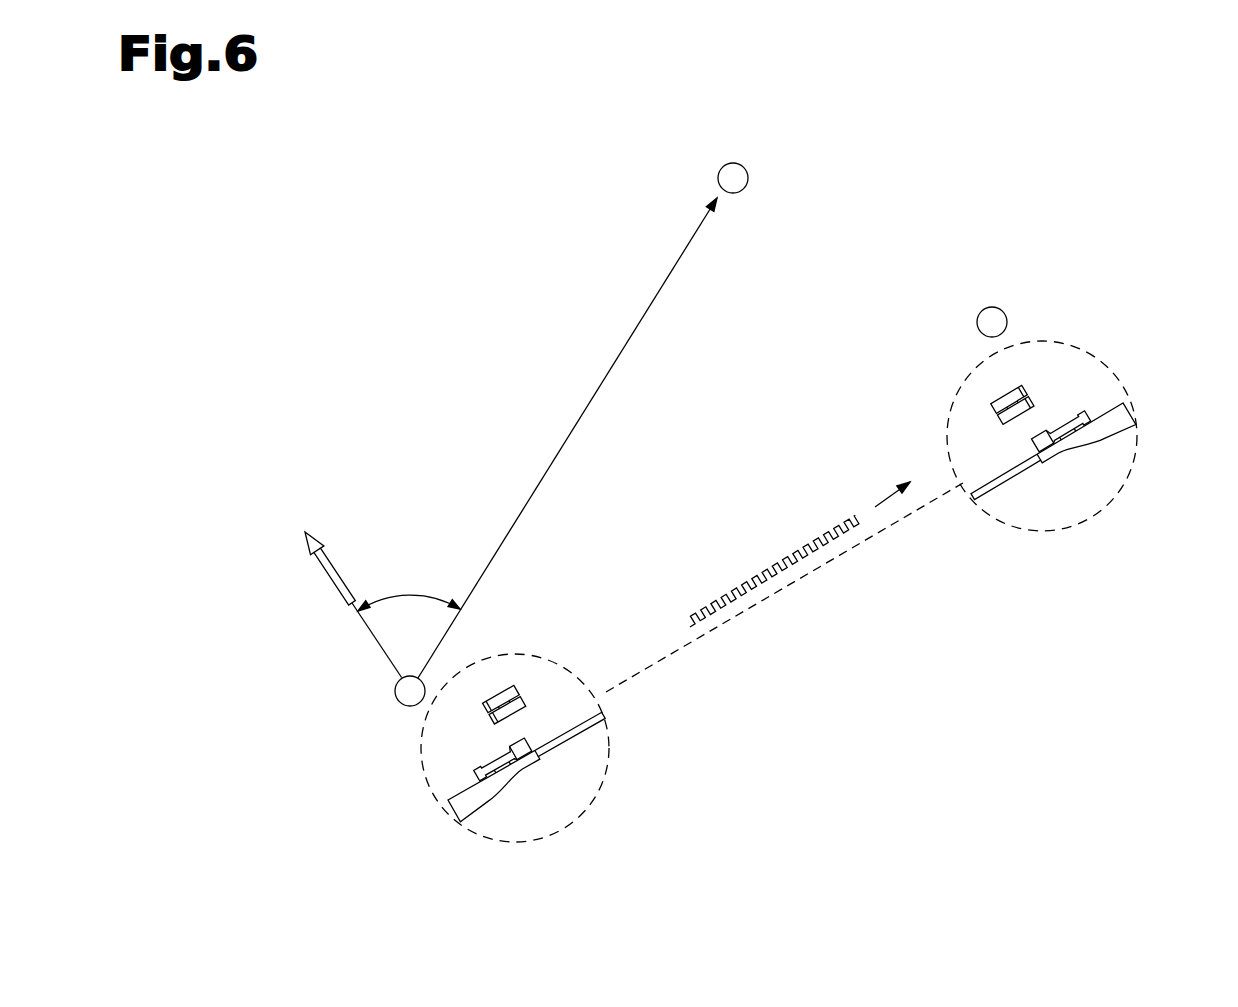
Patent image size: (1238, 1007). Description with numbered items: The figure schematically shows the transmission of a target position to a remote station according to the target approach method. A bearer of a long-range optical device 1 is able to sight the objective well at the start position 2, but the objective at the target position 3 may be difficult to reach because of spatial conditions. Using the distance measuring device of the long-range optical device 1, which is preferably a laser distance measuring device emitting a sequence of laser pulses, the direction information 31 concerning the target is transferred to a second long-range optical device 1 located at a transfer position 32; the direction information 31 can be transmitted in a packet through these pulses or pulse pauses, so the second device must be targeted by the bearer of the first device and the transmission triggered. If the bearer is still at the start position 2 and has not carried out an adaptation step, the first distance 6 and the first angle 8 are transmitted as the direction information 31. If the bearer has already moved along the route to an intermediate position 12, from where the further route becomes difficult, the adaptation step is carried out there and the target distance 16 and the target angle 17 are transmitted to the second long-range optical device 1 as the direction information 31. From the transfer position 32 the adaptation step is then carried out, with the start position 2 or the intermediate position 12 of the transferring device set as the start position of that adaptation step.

The long-range optical device 1 is at (647, 779).
The start position 2 is at (383, 672).
The target position 3 is at (770, 163).
The first distance 6 is at (517, 397).
The first angle 8 is at (370, 528).
The intermediate position 12 is at (410, 718).
The target distance 16 is at (565, 343).
The target angle 17 is at (443, 527).
The direction information 31 is at (760, 503).
The transfer position 32 is at (1035, 305).